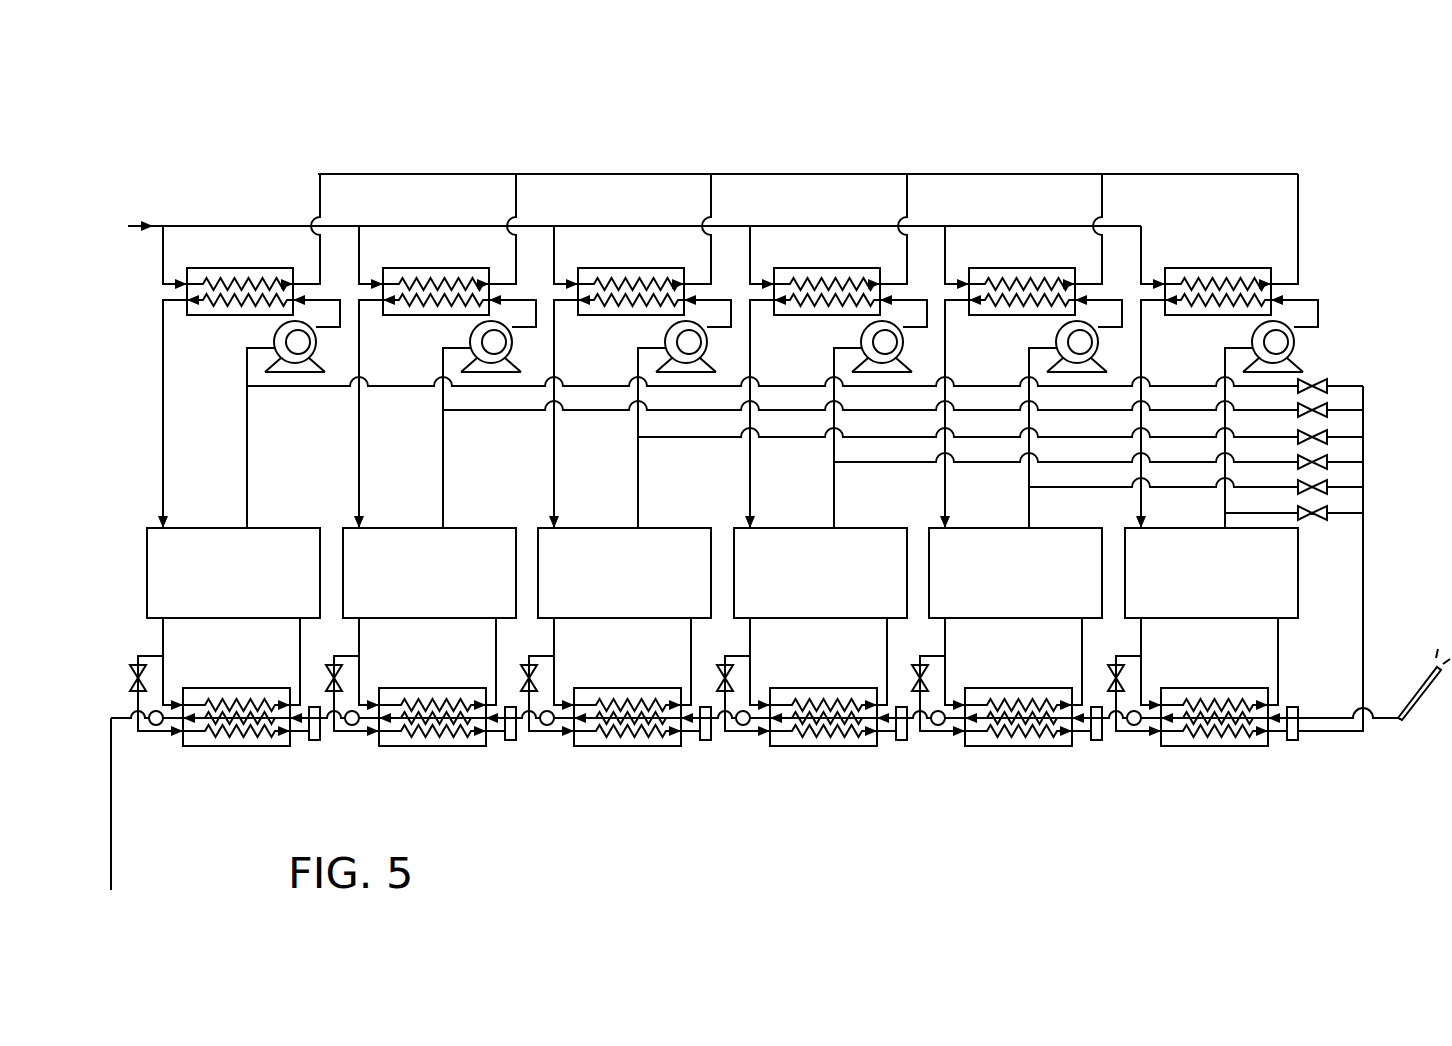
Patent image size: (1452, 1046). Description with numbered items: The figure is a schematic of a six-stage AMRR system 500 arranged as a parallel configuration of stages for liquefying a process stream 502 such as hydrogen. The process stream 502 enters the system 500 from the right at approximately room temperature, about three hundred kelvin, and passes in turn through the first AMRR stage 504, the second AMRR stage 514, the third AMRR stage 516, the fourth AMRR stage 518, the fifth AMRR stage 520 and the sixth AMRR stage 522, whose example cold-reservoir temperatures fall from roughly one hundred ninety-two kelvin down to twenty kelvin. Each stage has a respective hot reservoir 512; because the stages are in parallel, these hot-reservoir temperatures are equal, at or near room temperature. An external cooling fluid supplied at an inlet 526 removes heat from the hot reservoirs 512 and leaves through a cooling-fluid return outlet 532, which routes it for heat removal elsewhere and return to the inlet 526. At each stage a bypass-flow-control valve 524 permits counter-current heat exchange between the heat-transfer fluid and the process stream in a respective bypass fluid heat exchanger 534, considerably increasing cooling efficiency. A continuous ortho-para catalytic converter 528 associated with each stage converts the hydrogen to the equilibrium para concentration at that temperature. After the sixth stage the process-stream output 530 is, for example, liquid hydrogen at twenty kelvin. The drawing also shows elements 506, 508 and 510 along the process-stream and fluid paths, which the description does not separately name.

The six-stage AMRR system 500 is at (1015, 167).
The process stream 502 is at (1425, 682).
The first AMRR stage 504 is at (1211, 573).
The return line 506 is at (1350, 733).
The heat exchanger 508 is at (725, 743).
The pump 510 is at (744, 346).
The hot reservoir 512 is at (733, 272).
The second AMRR stage 514 is at (1015, 573).
The third AMRR stage 516 is at (820, 573).
The fourth AMRR stage 518 is at (624, 573).
The fifth AMRR stage 520 is at (429, 573).
The sixth AMRR stage 522 is at (233, 573).
The bypass-flow-control valve 524 is at (633, 679).
The inlet 526 is at (152, 224).
The continuous ortho-para catalytic converter 528 is at (661, 761).
The process-stream output 530 is at (112, 815).
The cooling-fluid return outlet 532 is at (1284, 174).
The bypass fluid heat exchanger 534 is at (780, 767).